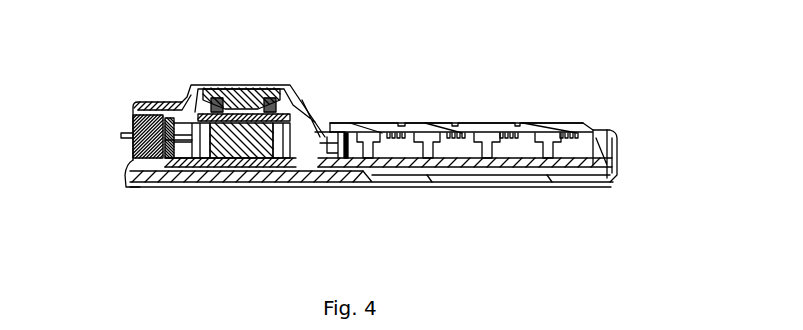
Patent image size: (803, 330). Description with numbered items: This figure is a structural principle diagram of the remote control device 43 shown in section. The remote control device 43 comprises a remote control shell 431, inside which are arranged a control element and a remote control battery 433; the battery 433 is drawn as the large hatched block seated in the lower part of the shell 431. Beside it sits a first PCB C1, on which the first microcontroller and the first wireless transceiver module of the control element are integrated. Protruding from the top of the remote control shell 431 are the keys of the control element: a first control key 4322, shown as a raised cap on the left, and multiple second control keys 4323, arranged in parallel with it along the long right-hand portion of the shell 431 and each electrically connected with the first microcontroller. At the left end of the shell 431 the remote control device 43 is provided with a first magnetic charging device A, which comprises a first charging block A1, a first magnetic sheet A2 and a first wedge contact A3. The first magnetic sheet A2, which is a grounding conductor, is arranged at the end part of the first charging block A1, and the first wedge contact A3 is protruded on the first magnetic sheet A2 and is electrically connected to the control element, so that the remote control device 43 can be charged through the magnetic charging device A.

The remote control device 43 is at (501, 114).
The remote control shell 431 is at (183, 176).
The remote control battery 433 is at (235, 165).
The first control key 4322 is at (252, 92).
The second control keys 4323 is at (370, 122).
The first magnetic charging device A is at (117, 170).
The first charging block A1 is at (143, 182).
The first magnetic sheet A2 is at (133, 161).
The first wedge contact A3 is at (133, 137).
The first PCB C1 is at (278, 165).